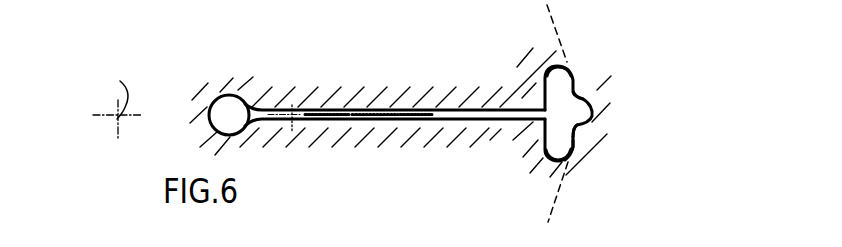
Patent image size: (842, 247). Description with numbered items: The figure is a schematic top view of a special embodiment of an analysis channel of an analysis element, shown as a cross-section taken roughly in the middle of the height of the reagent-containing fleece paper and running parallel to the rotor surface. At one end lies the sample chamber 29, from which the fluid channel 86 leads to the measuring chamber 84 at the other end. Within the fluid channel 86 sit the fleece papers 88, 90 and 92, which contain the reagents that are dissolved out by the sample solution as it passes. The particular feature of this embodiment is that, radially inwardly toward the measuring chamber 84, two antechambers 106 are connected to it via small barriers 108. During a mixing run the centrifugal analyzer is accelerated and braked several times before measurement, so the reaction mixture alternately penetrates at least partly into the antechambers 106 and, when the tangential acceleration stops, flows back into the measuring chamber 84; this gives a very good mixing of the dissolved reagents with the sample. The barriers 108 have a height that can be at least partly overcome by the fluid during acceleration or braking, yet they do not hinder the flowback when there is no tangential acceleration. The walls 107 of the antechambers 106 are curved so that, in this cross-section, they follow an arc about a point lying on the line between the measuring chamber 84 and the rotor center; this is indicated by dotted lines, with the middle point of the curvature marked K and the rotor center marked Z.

The sample chamber 29 is at (236, 110).
The measuring chamber 84 is at (588, 113).
The fluid channel 86 is at (463, 109).
The fleece paper 88 is at (317, 122).
The fleece paper 90 is at (371, 122).
The fleece paper 92 is at (421, 122).
The antechambers 106 is at (555, 79).
The walls of the antechambers 107 is at (574, 151).
The small barriers 108 is at (579, 92).
The middle point of the curvature K is at (295, 105).
The rotor center Z is at (118, 98).